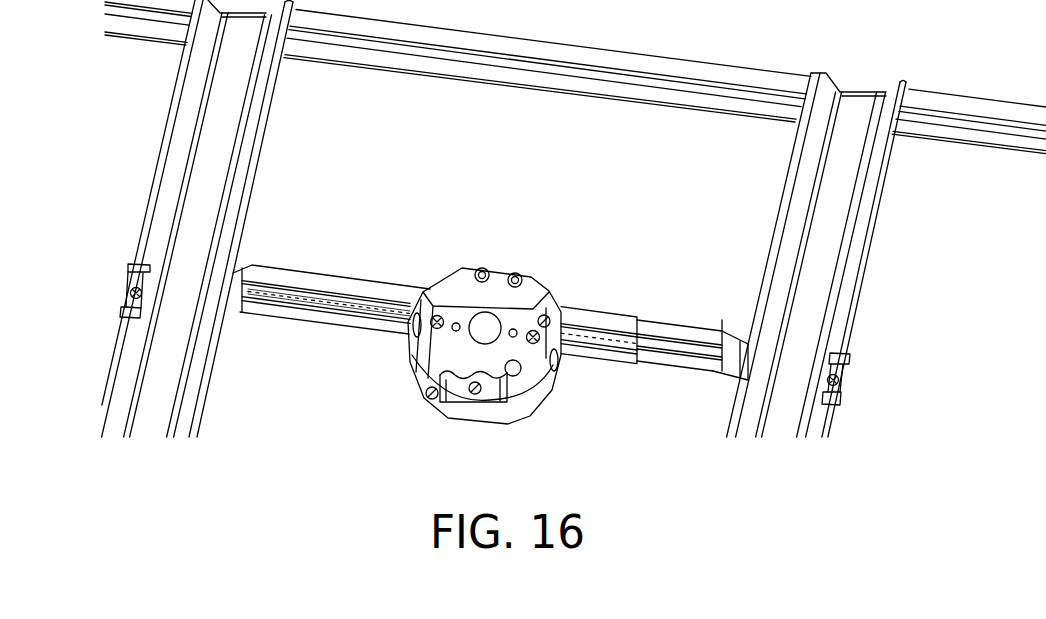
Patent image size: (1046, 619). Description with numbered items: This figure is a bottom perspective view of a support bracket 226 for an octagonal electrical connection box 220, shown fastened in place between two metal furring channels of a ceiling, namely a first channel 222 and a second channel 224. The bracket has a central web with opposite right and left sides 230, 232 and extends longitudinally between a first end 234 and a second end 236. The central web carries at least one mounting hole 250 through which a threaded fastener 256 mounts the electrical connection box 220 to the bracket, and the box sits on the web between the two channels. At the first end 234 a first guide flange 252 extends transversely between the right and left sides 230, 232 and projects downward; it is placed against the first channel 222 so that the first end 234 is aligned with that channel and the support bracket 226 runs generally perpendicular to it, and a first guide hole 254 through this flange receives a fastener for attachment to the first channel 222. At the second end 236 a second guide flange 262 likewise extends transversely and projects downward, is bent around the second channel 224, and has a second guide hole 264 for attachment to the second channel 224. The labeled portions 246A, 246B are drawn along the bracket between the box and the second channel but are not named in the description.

The electrical connection box 220 is at (544, 290).
The first channel 222 is at (235, 93).
The second channel 224 is at (838, 171).
The support bracket 226 is at (634, 291).
The central web right side 230 is at (293, 280).
The central web left side 232 is at (327, 325).
The first end 234 is at (131, 275).
The second end 236 is at (845, 403).
The first telescoping bar section 246A is at (688, 363).
The second telescoping bar section 246B is at (602, 354).
The mounting hole 250 is at (313, 300).
The first guide flange 252 is at (157, 270).
The first guide hole 254 is at (126, 299).
The threaded fastener 256 is at (434, 316).
The second guide flange 262 is at (849, 358).
The second guide hole 264 is at (845, 391).